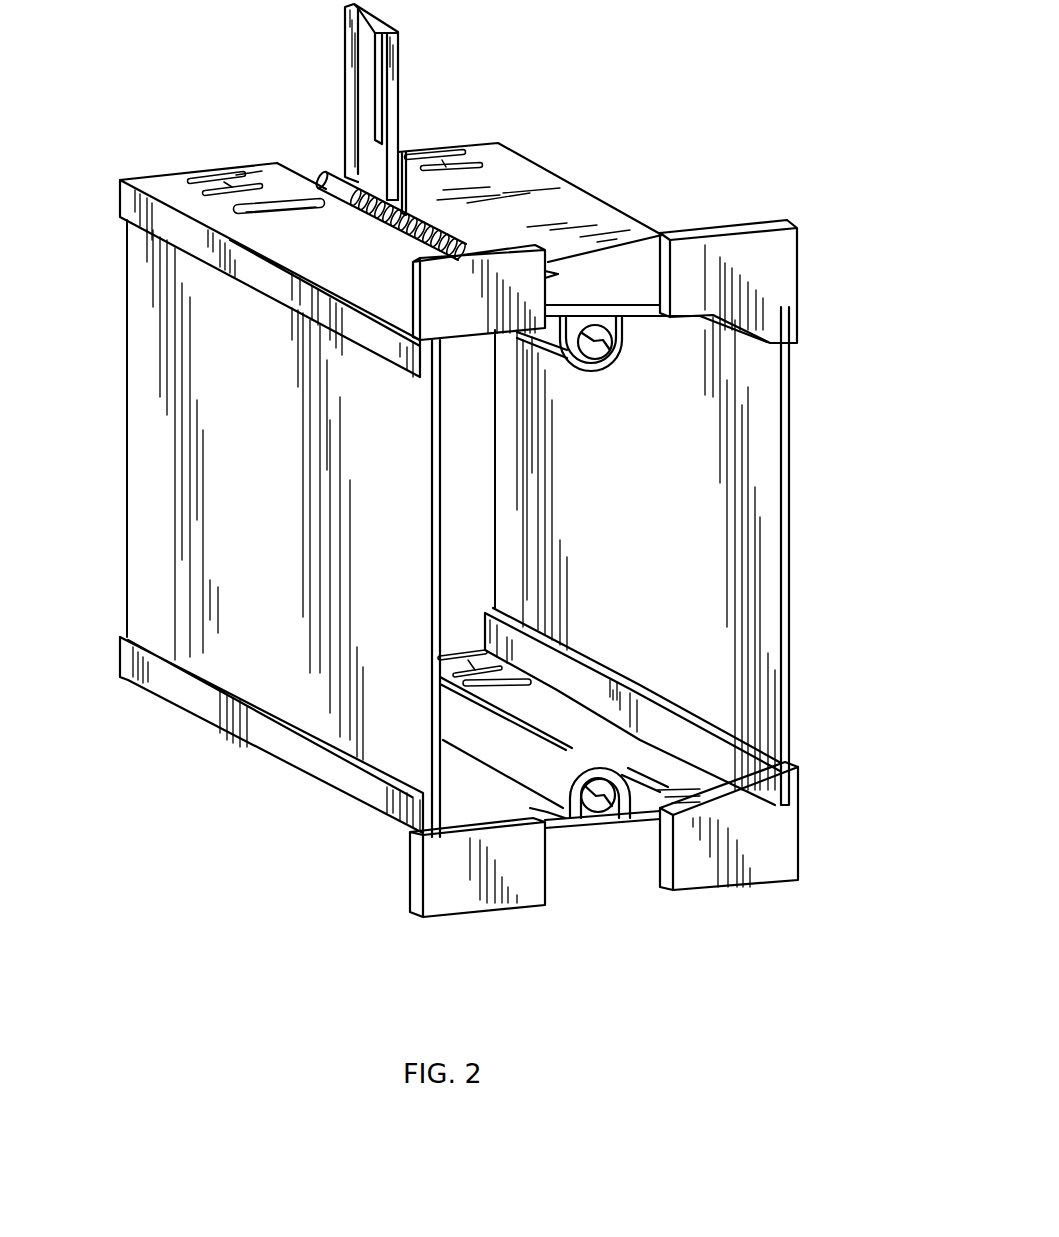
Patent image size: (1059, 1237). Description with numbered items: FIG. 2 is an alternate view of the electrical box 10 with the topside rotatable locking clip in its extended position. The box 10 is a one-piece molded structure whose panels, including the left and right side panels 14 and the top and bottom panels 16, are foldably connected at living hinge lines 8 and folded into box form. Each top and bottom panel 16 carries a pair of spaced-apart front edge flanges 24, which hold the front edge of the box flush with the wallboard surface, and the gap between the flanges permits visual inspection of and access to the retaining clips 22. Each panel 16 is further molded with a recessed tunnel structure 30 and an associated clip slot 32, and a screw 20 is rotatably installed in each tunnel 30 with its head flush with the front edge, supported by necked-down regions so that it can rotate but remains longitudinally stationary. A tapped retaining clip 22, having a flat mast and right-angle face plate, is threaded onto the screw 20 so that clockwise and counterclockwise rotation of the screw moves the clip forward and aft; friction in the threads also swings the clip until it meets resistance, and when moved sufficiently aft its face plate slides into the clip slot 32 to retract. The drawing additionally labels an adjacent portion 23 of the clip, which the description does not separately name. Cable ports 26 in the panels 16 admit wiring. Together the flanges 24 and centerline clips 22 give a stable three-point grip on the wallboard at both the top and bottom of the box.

The box 10 is at (745, 41).
The living hinge lines 8 is at (127, 387).
The side panels 14 is at (763, 472).
The top and bottom panels 16 is at (697, 780).
The screw 20 is at (603, 807).
The retaining clip 22 is at (357, 52).
The hinge tab 23 is at (387, 70).
The front edge flanges 24 is at (533, 908).
The cable ports 26 is at (442, 154).
The tunnel structure 30 is at (573, 768).
The clip slot 32 is at (247, 213).